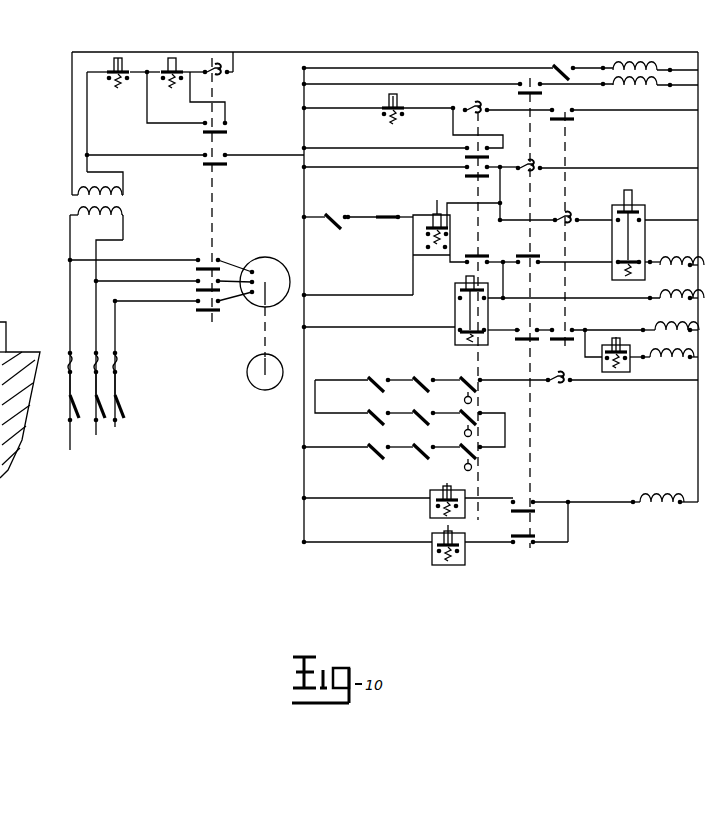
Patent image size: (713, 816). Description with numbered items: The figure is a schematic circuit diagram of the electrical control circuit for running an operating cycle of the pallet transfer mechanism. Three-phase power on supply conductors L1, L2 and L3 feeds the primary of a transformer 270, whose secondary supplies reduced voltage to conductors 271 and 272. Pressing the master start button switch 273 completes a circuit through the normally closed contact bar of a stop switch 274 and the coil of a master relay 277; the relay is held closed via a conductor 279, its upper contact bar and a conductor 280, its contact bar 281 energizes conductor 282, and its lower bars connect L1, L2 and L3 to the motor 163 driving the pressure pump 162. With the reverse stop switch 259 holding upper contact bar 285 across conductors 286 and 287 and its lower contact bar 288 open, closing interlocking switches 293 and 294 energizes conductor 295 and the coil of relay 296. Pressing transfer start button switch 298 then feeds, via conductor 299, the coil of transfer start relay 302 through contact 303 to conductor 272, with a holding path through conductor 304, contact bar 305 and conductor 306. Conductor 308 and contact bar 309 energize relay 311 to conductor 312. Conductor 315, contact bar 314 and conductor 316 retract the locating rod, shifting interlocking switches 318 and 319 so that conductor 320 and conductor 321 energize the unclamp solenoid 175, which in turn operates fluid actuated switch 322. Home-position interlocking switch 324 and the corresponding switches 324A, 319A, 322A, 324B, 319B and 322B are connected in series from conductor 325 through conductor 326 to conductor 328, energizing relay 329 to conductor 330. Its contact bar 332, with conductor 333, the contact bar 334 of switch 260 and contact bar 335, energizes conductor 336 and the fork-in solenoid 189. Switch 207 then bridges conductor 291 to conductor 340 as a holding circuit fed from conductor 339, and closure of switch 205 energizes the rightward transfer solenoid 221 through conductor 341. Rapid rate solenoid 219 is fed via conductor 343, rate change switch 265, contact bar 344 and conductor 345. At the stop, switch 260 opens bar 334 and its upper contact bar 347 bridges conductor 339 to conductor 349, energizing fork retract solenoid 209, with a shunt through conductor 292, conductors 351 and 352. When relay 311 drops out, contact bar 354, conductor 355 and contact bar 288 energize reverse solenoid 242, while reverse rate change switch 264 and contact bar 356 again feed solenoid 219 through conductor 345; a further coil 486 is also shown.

The pressure pump 162 is at (258, 388).
The motor 163 is at (251, 264).
The pallet unclamp solenoid 175 is at (630, 68).
The solenoid 189 is at (649, 325).
The switch 205 is at (602, 368).
The switch 207 is at (428, 256).
The solenoid 209 is at (649, 296).
The rate change solenoid 219 is at (652, 510).
The rightward transfer solenoid 221 is at (645, 368).
The solenoid 242 is at (656, 254).
The reverse stop switch 259 is at (618, 236).
The switch 260 is at (483, 344).
The reverse rate change switch 264 is at (432, 552).
The rate change switch 265 is at (427, 505).
The transformer 270 is at (124, 204).
The conductor 271 is at (92, 158).
The conductor 272 is at (72, 70).
The master start button switch 273 is at (173, 63).
The stop switch 274 is at (119, 68).
The master relay 277 is at (221, 78).
The conductor 279 is at (231, 112).
The conductor 280 is at (147, 108).
The contact bar 281 is at (227, 161).
The conductor 282 is at (305, 258).
The upper contact bar 285 is at (639, 202).
The conductor 286 is at (598, 204).
The conductor 287 is at (654, 216).
The lower contact bar 288 is at (634, 276).
The conductor 291 is at (408, 280).
The conductor 292 is at (460, 260).
The switch 293 is at (336, 231).
The interlocking switch 294 is at (376, 216).
The conductor 295 is at (492, 216).
The relay 296 is at (568, 224).
The transfer start button switch 298 is at (389, 114).
The conductor 299 is at (428, 108).
The transfer start relay 302 is at (476, 106).
The contact 303 is at (575, 121).
The conductor 304 is at (460, 118).
The contact bar 305 is at (464, 157).
The conductor 306 is at (354, 138).
The conductor 308 is at (336, 170).
The contact bar 309 is at (464, 177).
The relay 311 is at (540, 164).
The conductor 312 is at (584, 168).
The contact bar 314 is at (542, 94).
The conductor 315 is at (364, 90).
The conductor 316 is at (600, 94).
The interlocking switch 318 is at (560, 66).
The interlocking switch 319 is at (416, 460).
The interlocking switch 319A is at (412, 420).
The interlocking switch 319B is at (415, 378).
The conductor 320 is at (468, 68).
The conductor 321 is at (594, 68).
The fluid actuated switch 322 is at (476, 466).
The interlocking switch 322A is at (471, 412).
The interlocking switch 322B is at (473, 378).
The interlocking switch 324 is at (376, 460).
The interlocking switch 324A is at (368, 422).
The interlocking switch 324B is at (380, 376).
The conductor 325 is at (312, 452).
The conductor 326 is at (505, 431).
The conductor 328 is at (528, 380).
The relay 329 is at (557, 386).
The conductor 330 is at (590, 392).
The contact bar 332 is at (560, 322).
The conductor 333 is at (314, 327).
The contact bar 334 is at (455, 327).
The contact bar 335 is at (524, 314).
The conductor 336 is at (579, 326).
The conductor 339 is at (322, 284).
The conductor 340 is at (462, 208).
The conductor 341 is at (605, 322).
The conductor 343 is at (344, 496).
The contact bar 344 is at (530, 502).
The conductor 345 is at (586, 509).
The upper contact bar 347 is at (458, 291).
The conductor 349 is at (614, 315).
The conductor 351 is at (496, 254).
The conductor 352 is at (545, 294).
The contact bar 354 is at (524, 260).
The conductor 355 is at (562, 270).
The contact bar 356 is at (531, 552).
The coil 486 is at (642, 96).
The supply conductor L1 is at (70, 350).
The supply conductor L2 is at (96, 370).
The supply conductor L3 is at (115, 356).